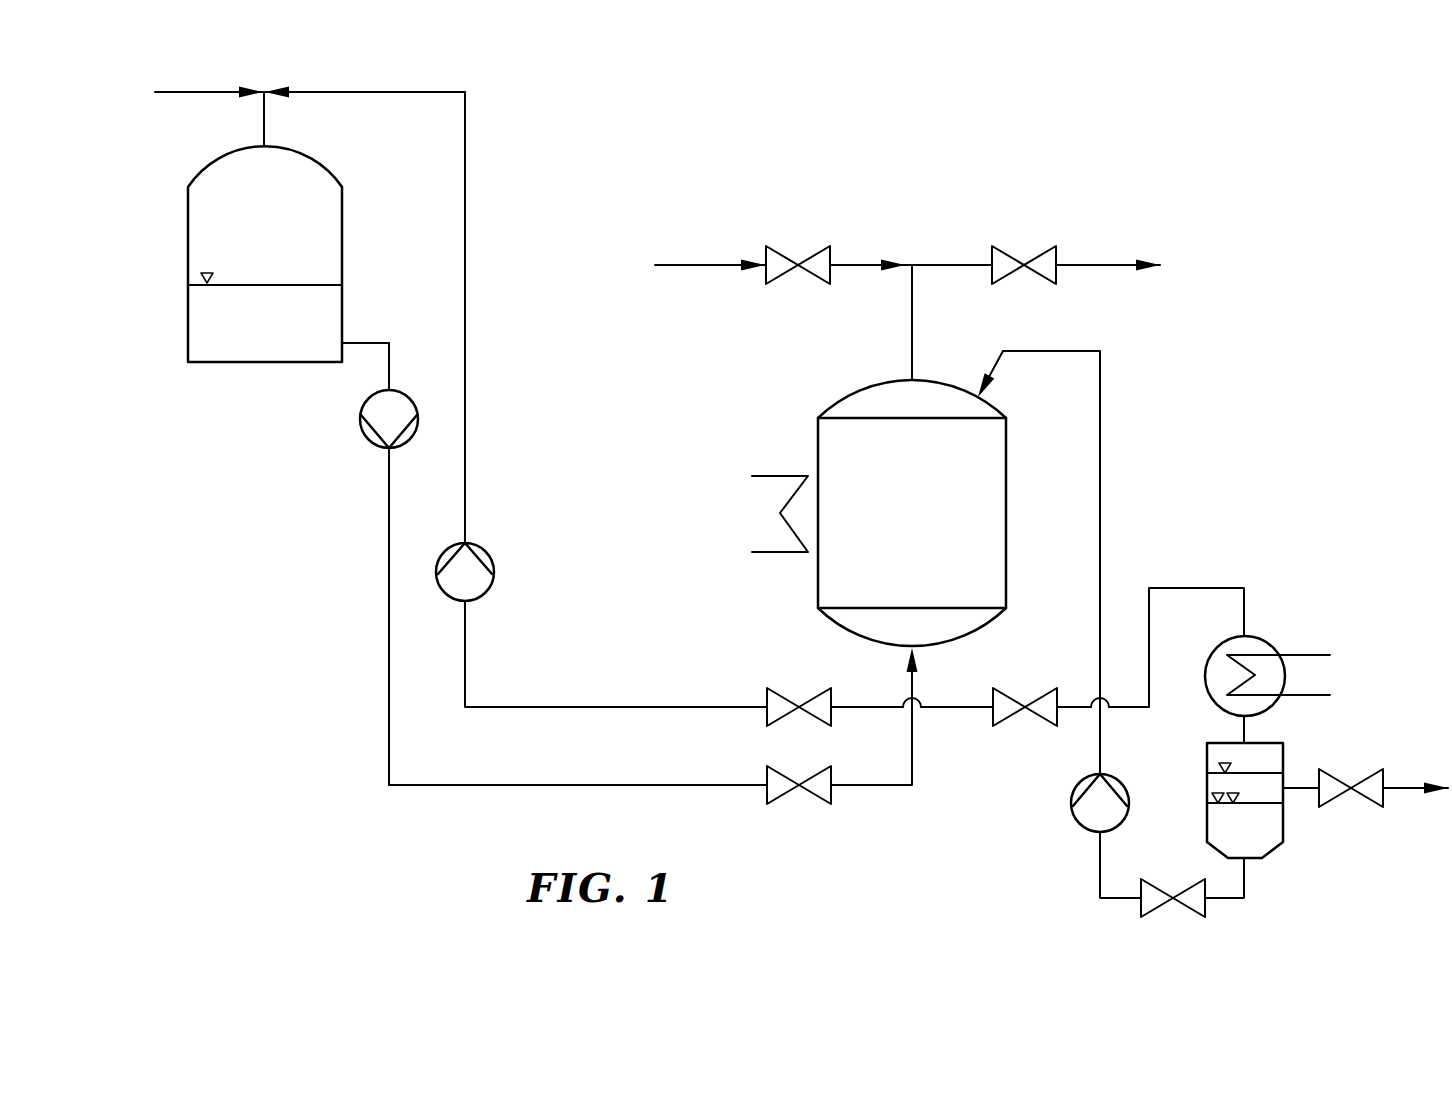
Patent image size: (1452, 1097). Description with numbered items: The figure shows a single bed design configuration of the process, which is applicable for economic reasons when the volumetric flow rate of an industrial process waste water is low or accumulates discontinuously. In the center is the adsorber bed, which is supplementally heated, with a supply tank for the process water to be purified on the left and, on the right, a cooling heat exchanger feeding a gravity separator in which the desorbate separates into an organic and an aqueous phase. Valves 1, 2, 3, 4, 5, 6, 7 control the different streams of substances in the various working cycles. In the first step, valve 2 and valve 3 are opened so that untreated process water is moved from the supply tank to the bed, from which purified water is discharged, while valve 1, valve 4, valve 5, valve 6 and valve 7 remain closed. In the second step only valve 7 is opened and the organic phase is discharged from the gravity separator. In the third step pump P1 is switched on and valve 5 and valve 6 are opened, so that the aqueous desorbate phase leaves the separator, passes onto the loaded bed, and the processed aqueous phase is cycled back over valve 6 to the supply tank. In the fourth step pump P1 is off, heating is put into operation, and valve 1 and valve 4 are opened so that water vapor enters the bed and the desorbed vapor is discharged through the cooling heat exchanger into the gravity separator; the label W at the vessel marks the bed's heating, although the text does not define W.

The valve 1 is at (782, 253).
The valve 2 is at (1045, 252).
The valve 3 is at (778, 795).
The valve 4 is at (1006, 725).
The valve 5 is at (1150, 915).
The valve 6 is at (781, 695).
The valve 7 is at (1375, 770).
The pump P1 is at (1082, 830).
The water jacket W is at (771, 514).